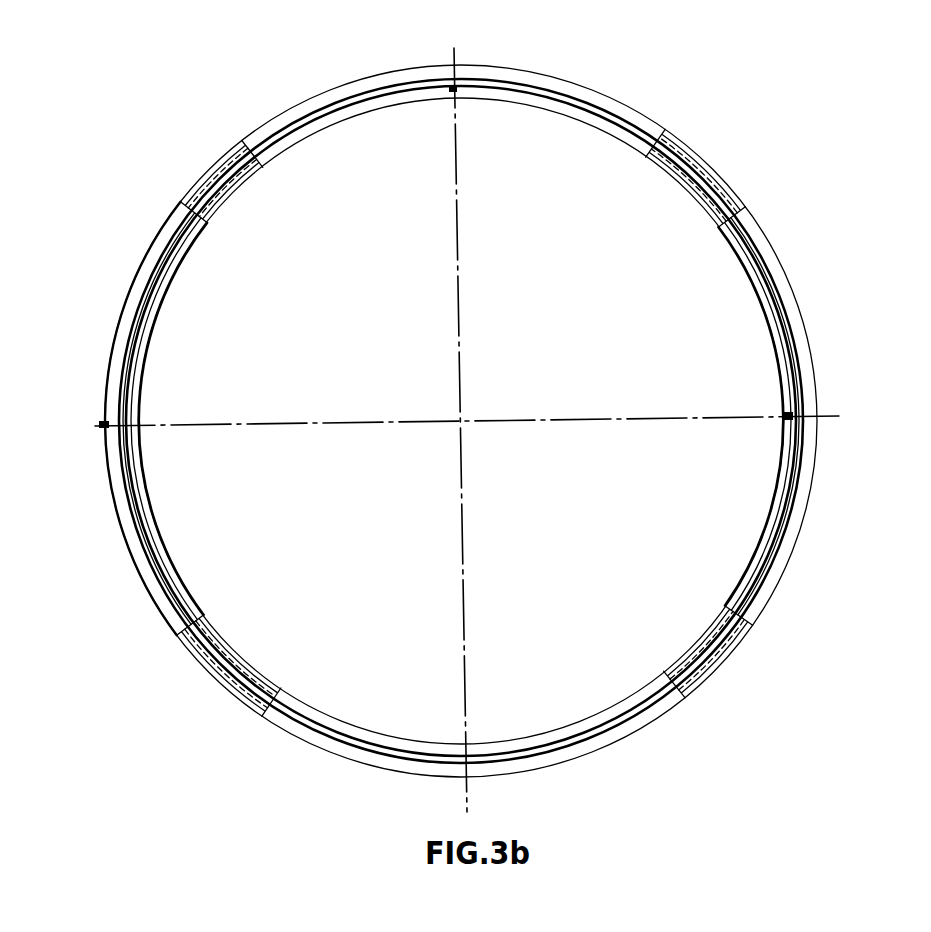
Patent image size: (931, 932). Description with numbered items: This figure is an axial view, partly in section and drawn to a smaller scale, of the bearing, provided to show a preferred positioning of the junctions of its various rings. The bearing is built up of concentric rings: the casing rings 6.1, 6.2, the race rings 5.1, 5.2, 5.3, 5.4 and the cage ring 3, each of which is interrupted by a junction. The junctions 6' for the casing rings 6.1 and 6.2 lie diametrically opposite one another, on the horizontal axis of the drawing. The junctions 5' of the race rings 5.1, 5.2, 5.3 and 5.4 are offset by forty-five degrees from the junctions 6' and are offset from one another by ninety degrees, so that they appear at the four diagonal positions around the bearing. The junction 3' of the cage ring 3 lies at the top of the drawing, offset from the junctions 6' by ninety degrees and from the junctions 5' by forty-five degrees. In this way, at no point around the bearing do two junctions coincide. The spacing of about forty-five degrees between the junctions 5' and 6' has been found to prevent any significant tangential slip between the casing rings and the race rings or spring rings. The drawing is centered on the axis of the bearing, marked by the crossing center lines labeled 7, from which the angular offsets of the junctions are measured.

The cage ring 3 is at (461, 398).
The junction of the cage ring 3' is at (475, 49).
The race ring 5.1 is at (697, 690).
The race ring 5.2 is at (200, 200).
The race ring 5.3 is at (682, 143).
The race ring 5.4 is at (218, 632).
The junctions of the race rings 5' is at (475, 400).
The casing ring 6.1 is at (122, 338).
The casing ring 6.2 is at (783, 375).
The junctions of the casing rings 6' is at (425, 410).
The center axis 7 is at (463, 419).